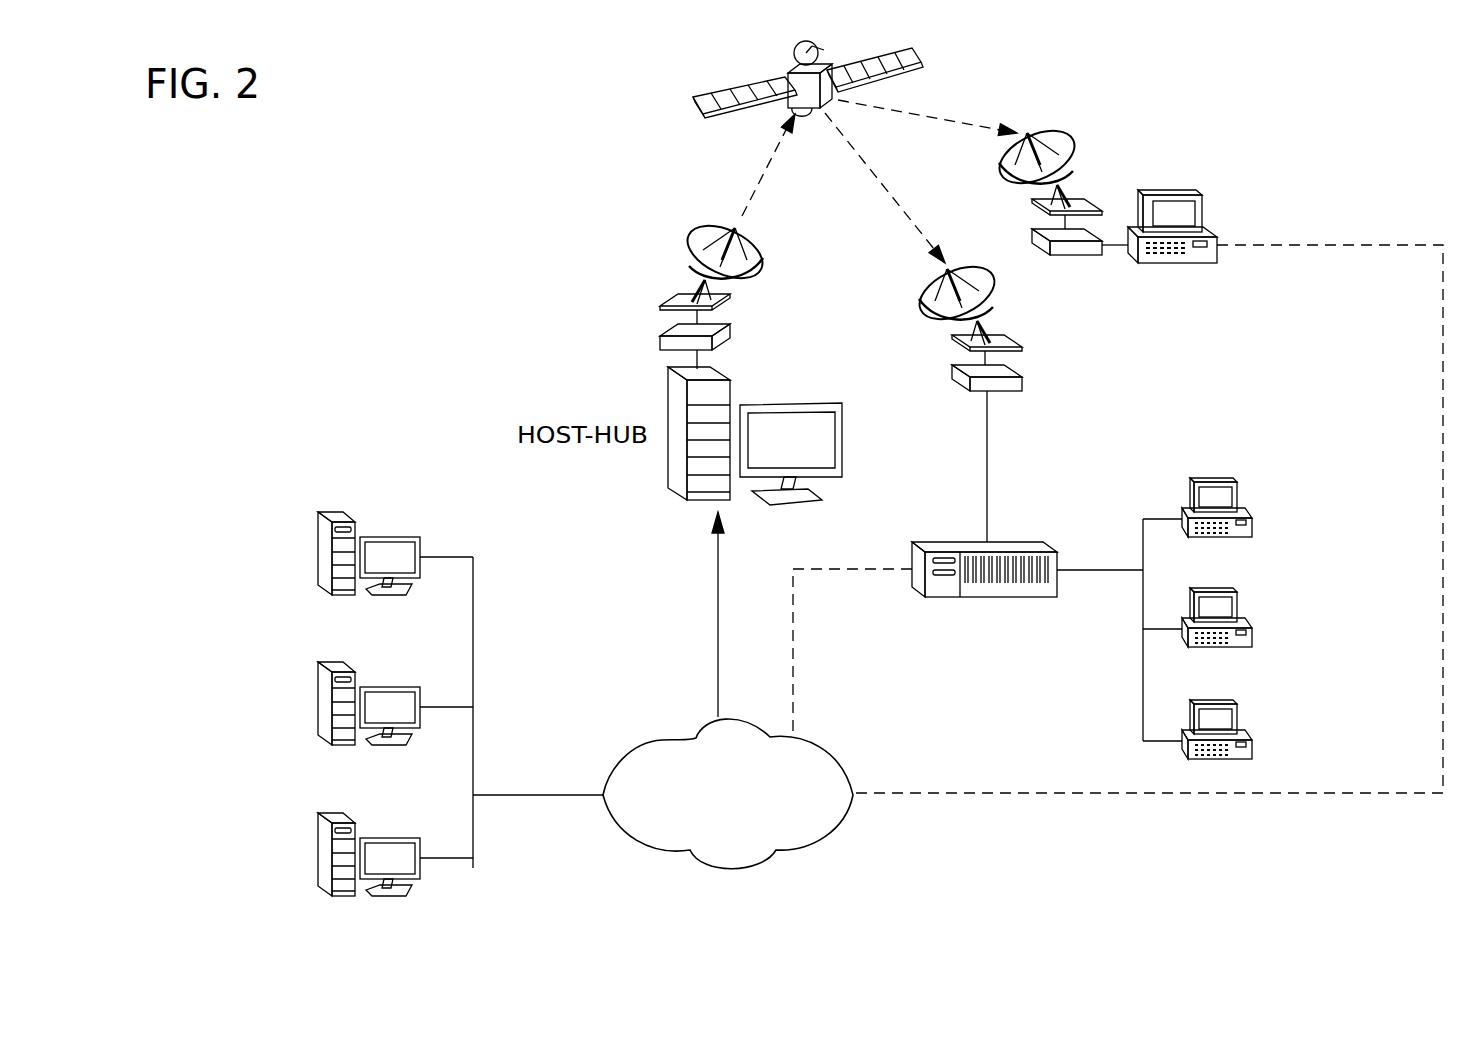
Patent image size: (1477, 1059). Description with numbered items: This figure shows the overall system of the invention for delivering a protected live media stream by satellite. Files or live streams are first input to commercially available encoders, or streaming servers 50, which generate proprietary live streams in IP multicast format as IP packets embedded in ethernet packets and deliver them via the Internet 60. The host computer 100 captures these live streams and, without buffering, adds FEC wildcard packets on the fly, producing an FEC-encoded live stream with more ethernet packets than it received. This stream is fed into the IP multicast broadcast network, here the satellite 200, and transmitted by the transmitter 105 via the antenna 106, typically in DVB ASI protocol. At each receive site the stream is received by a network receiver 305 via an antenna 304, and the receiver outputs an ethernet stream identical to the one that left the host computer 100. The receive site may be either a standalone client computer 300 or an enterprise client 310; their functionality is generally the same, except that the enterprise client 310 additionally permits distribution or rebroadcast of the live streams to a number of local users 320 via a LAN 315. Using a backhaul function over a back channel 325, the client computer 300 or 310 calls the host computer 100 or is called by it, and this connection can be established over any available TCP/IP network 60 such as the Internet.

The satellite 200 is at (717, 92).
The antenna 106 is at (719, 224).
The transmitter 105 is at (731, 329).
The host computer 100 is at (843, 428).
The antenna 304 is at (1000, 151).
The network receiver 305 is at (1028, 234).
The standalone client computer 300 is at (1203, 205).
The enterprise client 310 is at (933, 541).
The LAN 315 is at (1143, 518).
The local users 320 is at (1213, 478).
The encoders (streaming servers) 50 is at (397, 535).
The Internet 60 is at (660, 740).
The back channel 325 is at (795, 686).